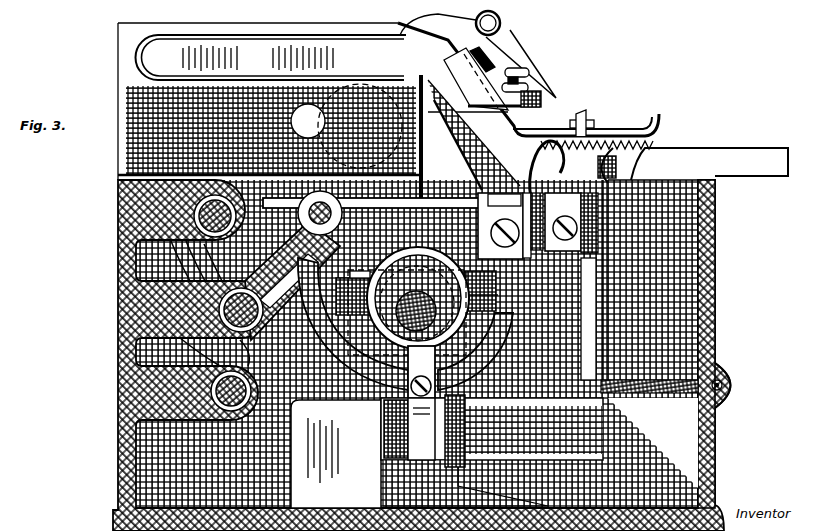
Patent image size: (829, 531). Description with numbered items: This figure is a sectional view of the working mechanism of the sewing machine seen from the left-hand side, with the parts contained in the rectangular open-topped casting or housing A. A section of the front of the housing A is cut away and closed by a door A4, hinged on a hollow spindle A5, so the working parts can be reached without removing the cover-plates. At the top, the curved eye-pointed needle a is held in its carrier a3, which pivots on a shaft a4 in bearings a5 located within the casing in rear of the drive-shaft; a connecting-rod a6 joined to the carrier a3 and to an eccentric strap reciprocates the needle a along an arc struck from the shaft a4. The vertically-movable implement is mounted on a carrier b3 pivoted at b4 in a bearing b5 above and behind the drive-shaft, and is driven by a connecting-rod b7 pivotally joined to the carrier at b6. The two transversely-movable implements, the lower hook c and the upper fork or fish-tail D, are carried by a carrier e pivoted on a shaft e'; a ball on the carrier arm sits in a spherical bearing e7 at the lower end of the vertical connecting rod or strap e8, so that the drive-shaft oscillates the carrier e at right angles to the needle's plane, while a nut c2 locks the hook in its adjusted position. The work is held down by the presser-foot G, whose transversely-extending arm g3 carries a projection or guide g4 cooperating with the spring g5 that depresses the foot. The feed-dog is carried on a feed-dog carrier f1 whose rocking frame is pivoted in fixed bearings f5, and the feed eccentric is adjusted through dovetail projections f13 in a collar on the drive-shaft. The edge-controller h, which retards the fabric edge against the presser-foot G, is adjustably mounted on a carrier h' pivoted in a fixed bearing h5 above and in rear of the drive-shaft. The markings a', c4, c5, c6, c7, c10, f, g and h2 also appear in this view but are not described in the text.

The casting or housing A is at (408, 277).
The door A4 is at (710, 246).
The hollow spindle A5 is at (722, 362).
The eye-pointed needle a is at (346, 64).
The lever ring a' is at (497, 21).
The carrier a3 is at (528, 75).
The shaft a4 is at (284, 281).
The bearings a5 is at (165, 298).
The connecting-rod a6 is at (312, 192).
The carrier b3 is at (474, 135).
The pivot b4 is at (269, 99).
The bearing b5 is at (210, 303).
The pivotal connection b6 is at (468, 115).
The connecting-rod b7 is at (425, 186).
The lower implement c is at (598, 160).
The nut c2 is at (664, 160).
The shaft c4 is at (539, 443).
The gear c5 is at (460, 410).
The gear c6 is at (396, 429).
The collar c7 is at (421, 429).
The block c10 is at (469, 291).
The upper transversely-movable implement D is at (583, 115).
The carrier e is at (452, 285).
The shaft e' is at (336, 454).
The spherical bearing e7 is at (342, 293).
The connecting rod or strap e8 is at (421, 406).
The pawl f is at (605, 165).
The feed-dog carrier f1 is at (590, 226).
The fixed bearings f5 is at (160, 380).
The dovetail projections f13 is at (427, 309).
The plate g is at (492, 78).
The transversely-extending arm g3 is at (511, 101).
The projection or guide g4 is at (520, 78).
The spring g5 is at (521, 64).
The presser-foot G is at (590, 121).
The edge-controller h is at (546, 169).
The carrier h' is at (408, 301).
The screw block h2 is at (491, 226).
The fixed bearing h5 is at (150, 208).